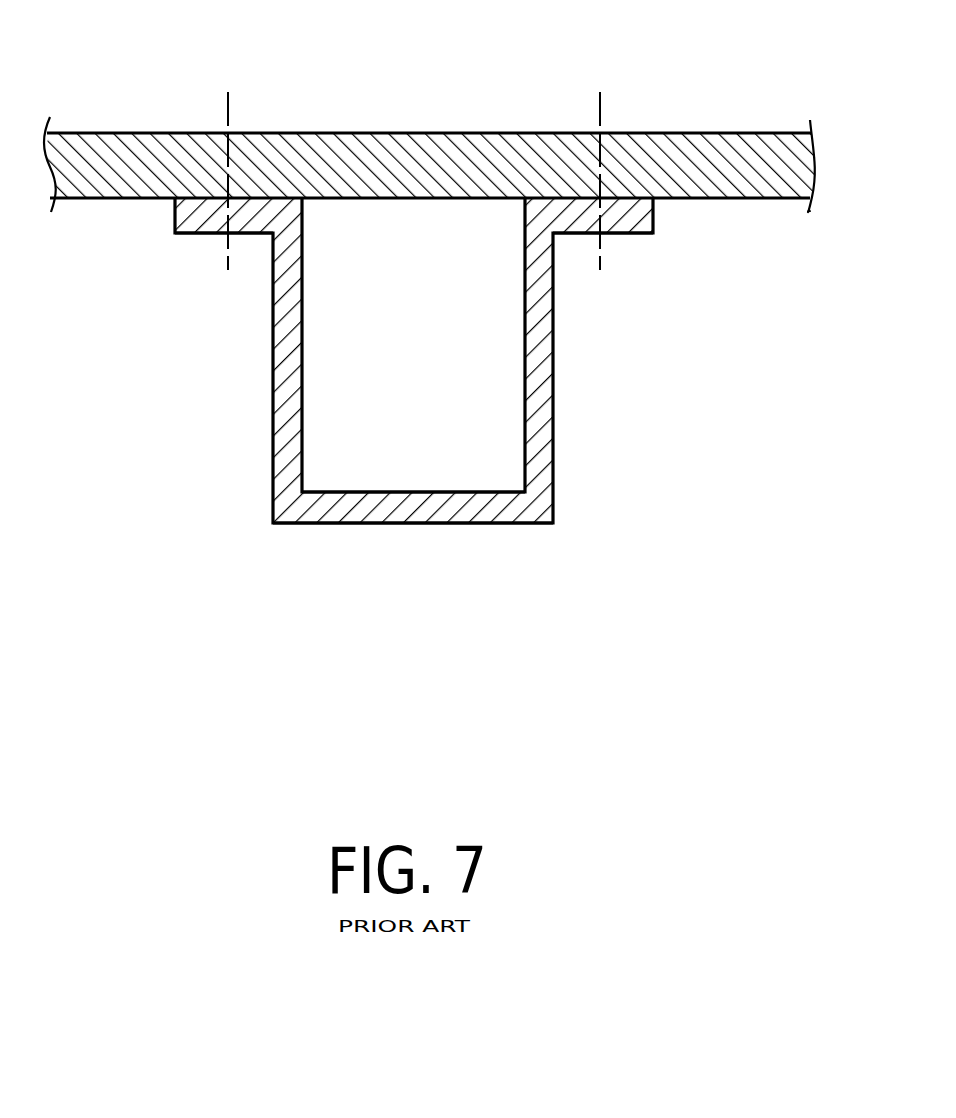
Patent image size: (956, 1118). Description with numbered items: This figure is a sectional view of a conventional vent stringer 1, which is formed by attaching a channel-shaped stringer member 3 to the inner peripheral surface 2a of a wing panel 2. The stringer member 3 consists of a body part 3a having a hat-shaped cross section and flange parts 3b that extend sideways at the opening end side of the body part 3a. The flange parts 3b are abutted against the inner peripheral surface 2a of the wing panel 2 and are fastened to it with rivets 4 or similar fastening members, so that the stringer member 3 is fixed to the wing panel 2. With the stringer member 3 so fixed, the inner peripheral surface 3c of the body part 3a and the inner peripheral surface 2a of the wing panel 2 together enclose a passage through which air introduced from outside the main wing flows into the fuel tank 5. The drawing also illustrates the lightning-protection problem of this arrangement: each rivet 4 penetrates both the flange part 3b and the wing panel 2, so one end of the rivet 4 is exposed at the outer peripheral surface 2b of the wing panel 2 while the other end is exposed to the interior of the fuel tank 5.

The vent stringer 1 is at (235, 520).
The wing panel 2 is at (713, 157).
The inner peripheral surface 2a is at (748, 198).
The outer peripheral surface 2b is at (777, 133).
The stringer member 3 is at (555, 468).
The body part 3a is at (423, 523).
The flange parts 3b is at (195, 233).
The inner peripheral surface 3c is at (357, 492).
The rivets 4 is at (227, 98).
The fuel tank 5 is at (780, 568).